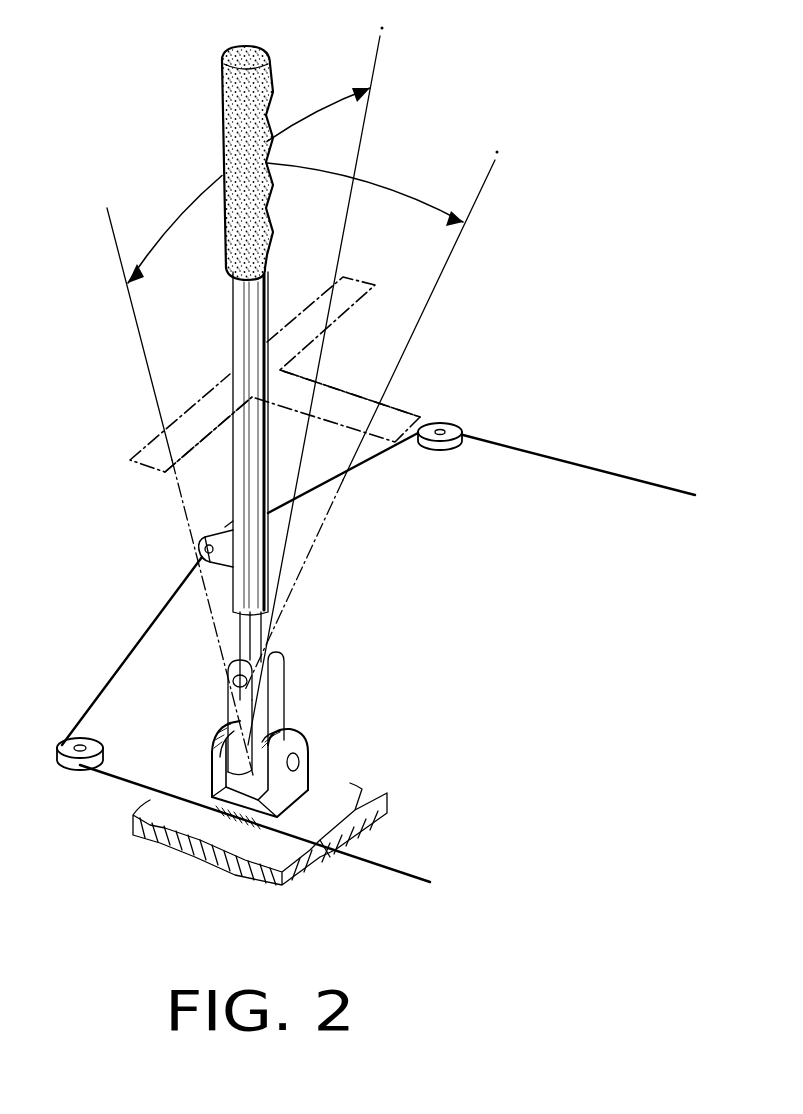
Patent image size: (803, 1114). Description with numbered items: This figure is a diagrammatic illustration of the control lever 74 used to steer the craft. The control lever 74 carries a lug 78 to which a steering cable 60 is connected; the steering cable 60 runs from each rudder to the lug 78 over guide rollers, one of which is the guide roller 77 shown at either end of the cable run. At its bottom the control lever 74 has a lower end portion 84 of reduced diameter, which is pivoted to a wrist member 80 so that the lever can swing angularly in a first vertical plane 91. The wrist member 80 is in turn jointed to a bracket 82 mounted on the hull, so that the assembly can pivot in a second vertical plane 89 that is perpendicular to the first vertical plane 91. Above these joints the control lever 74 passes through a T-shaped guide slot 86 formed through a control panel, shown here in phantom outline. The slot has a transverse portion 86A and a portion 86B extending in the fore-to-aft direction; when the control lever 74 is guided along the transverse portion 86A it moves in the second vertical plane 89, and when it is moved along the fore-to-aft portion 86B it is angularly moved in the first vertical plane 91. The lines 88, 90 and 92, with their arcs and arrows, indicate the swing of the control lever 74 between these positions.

The steering cable 60 is at (637, 478).
The control lever 74 is at (234, 47).
The guide roller 77 is at (97, 745).
The lug 78 is at (214, 535).
The wrist member 80 is at (273, 705).
The bracket 82 is at (305, 757).
The lower end portion 84 is at (262, 632).
The T-shaped guide slot 86 is at (152, 437).
The transverse portion 86A is at (225, 375).
The fore-to-aft portion 86B is at (486, 391).
The reference position line 88 is at (126, 287).
The second vertical plane 89 is at (200, 315).
The reference position line 90 is at (375, 75).
The first vertical plane 91 is at (408, 269).
The reference position line 92 is at (470, 216).